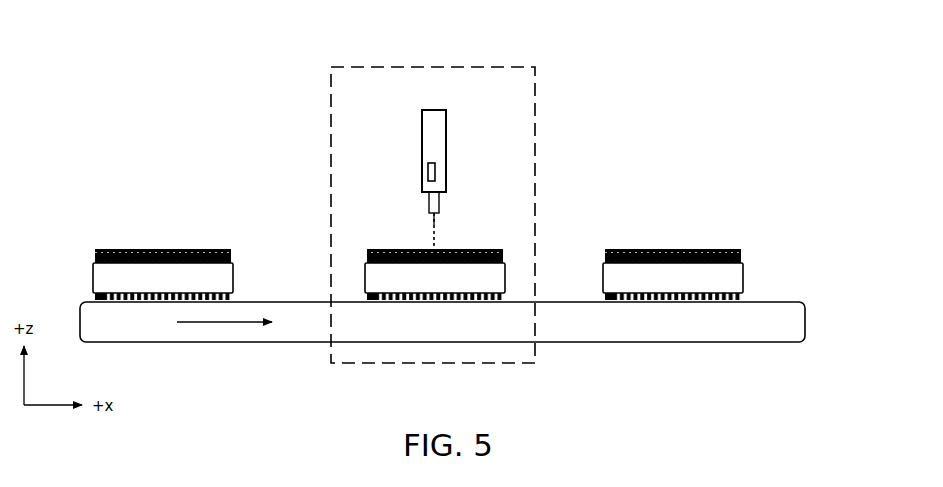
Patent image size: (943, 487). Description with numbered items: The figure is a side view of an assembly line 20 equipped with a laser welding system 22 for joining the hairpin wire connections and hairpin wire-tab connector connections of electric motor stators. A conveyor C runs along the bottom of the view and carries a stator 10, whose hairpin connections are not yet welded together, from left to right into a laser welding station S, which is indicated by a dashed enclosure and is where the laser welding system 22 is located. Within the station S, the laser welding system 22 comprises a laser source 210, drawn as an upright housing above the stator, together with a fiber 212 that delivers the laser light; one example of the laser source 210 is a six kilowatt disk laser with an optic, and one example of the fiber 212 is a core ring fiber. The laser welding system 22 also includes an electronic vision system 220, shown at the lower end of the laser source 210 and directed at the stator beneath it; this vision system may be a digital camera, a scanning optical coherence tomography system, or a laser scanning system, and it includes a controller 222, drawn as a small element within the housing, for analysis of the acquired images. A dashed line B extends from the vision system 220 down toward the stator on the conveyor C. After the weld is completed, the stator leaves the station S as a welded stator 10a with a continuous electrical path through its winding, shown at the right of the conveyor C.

The stator 10 is at (110, 222).
The stator 10a is at (753, 222).
The assembly line 20 is at (713, 92).
The laser welding system 22 is at (486, 132).
The laser source 210 is at (448, 136).
The fiber 212 is at (436, 220).
The electronic vision system 220 is at (440, 206).
The controller 222 is at (428, 170).
The laser welding station S is at (392, 66).
The beam / dispensed material B is at (430, 238).
The conveyor C is at (634, 323).